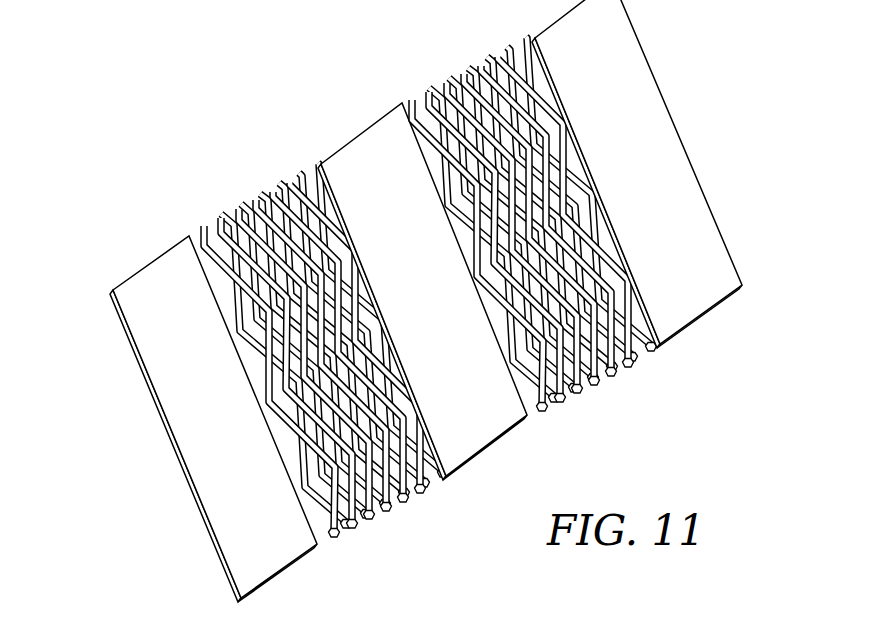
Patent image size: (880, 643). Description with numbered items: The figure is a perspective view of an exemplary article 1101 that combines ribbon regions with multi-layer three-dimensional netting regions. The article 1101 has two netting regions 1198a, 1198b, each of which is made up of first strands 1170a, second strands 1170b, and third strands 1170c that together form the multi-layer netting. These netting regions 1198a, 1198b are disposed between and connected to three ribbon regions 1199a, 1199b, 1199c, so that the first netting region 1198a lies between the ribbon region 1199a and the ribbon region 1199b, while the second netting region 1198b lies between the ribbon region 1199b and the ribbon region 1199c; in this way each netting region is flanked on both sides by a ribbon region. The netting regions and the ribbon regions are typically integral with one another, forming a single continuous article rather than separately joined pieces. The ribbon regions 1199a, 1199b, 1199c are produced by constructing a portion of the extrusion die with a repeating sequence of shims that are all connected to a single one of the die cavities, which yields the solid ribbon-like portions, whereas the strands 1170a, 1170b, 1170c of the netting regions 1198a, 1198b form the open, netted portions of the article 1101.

The article 1101 is at (398, 301).
The ribbon region 1199a is at (208, 481).
The ribbon region 1199b is at (350, 148).
The ribbon region 1199c is at (643, 107).
The netting region 1198a is at (291, 371).
The netting region 1198b is at (528, 246).
The first strands 1170a is at (633, 360).
The second strands 1170b is at (400, 502).
The third strands 1170c is at (594, 384).